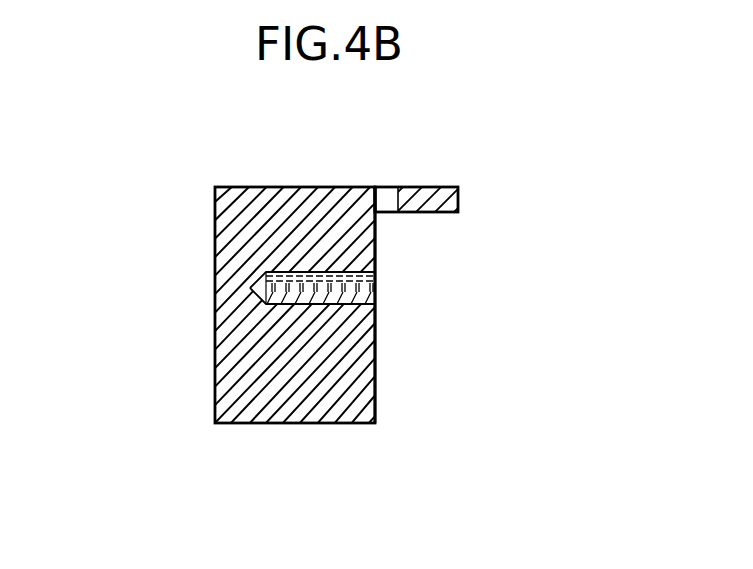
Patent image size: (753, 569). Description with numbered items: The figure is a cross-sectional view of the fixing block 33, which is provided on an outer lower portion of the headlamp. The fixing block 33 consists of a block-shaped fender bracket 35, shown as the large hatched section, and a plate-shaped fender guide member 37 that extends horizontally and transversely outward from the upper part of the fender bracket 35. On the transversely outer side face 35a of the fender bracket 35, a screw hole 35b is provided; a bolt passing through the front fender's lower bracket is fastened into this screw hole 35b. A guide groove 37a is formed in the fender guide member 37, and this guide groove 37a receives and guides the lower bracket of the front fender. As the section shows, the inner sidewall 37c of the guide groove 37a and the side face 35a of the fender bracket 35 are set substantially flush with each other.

The fixing block 33 is at (333, 284).
The fender bracket 35 is at (370, 360).
The side face 35a is at (378, 347).
The screw hole 35b is at (378, 287).
The fender guide member 37 is at (333, 284).
The guide groove 37a is at (385, 187).
The inner sidewall 37c is at (380, 198).